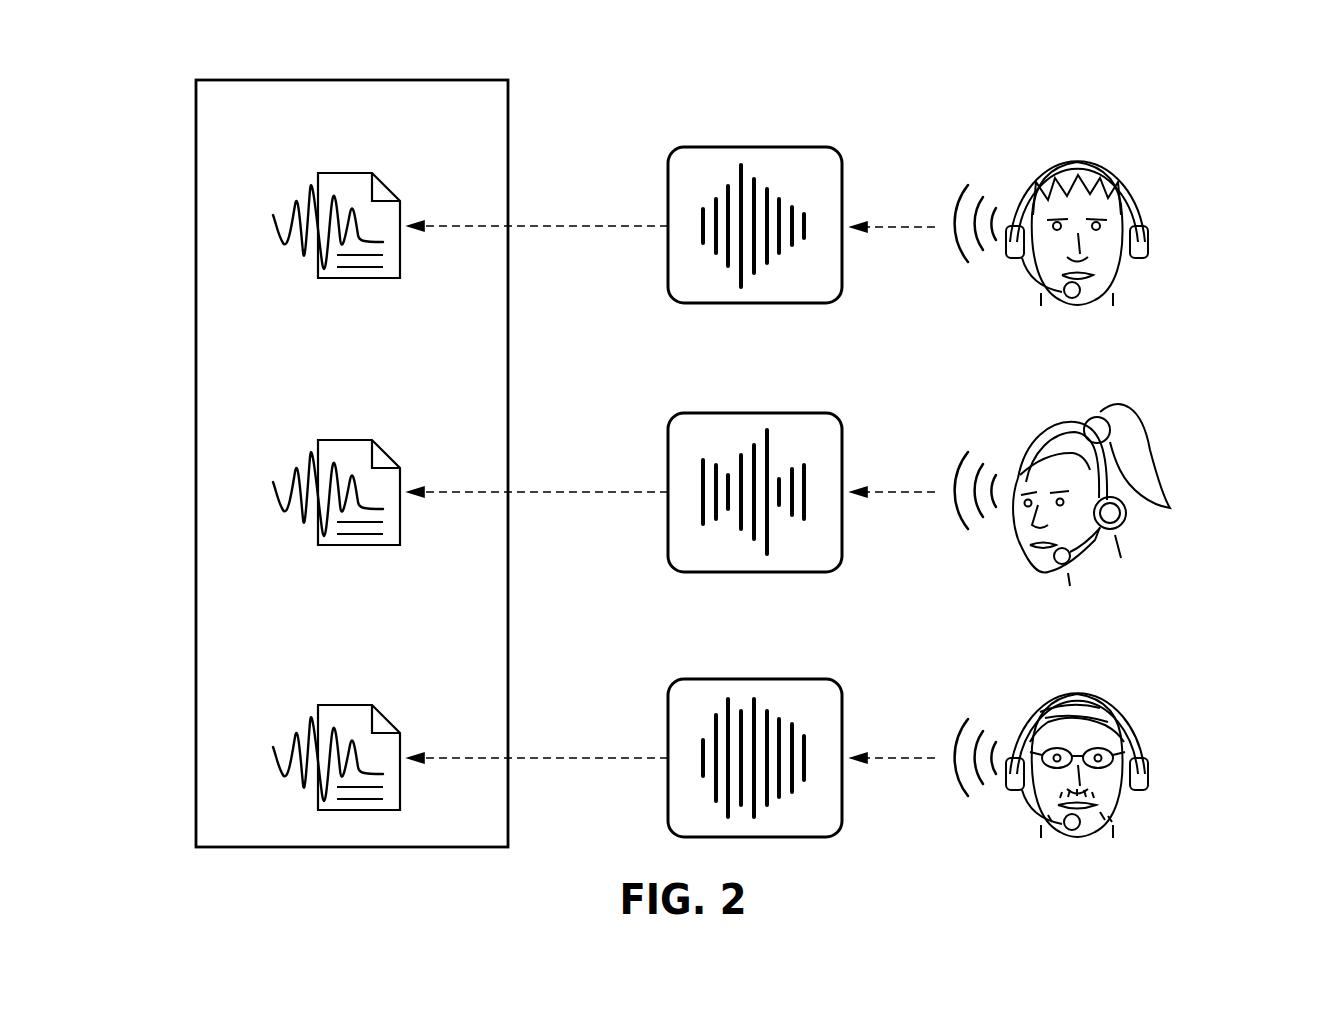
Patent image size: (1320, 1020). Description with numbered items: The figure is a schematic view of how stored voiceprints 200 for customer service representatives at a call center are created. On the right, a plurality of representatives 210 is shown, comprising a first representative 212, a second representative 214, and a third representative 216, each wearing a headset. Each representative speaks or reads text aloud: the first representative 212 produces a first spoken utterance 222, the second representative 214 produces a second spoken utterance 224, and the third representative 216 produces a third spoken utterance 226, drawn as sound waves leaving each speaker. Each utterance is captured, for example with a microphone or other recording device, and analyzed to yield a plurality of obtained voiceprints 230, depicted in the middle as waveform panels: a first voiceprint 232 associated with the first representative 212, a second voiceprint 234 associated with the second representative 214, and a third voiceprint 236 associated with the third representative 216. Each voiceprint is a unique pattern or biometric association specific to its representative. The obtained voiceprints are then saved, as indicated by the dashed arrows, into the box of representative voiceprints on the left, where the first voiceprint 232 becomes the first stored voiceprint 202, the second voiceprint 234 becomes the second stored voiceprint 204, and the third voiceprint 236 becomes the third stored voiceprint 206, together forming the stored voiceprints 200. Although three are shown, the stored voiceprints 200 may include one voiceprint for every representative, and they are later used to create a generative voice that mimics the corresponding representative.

The stored voiceprints 200 is at (196, 400).
The first stored voiceprint 202 is at (352, 279).
The second stored voiceprint 204 is at (358, 545).
The third stored voiceprint 206 is at (400, 783).
The plurality of representatives 210 is at (1212, 199).
The first representative 212 is at (1080, 150).
The second representative 214 is at (1050, 423).
The third representative 216 is at (1083, 682).
The first spoken utterance 222 is at (958, 205).
The second spoken utterance 224 is at (958, 472).
The third spoken utterance 226 is at (958, 738).
The plurality of obtained voiceprints 230 is at (722, 108).
The first voiceprint 232 is at (778, 147).
The second voiceprint 234 is at (778, 413).
The third voiceprint 236 is at (778, 679).